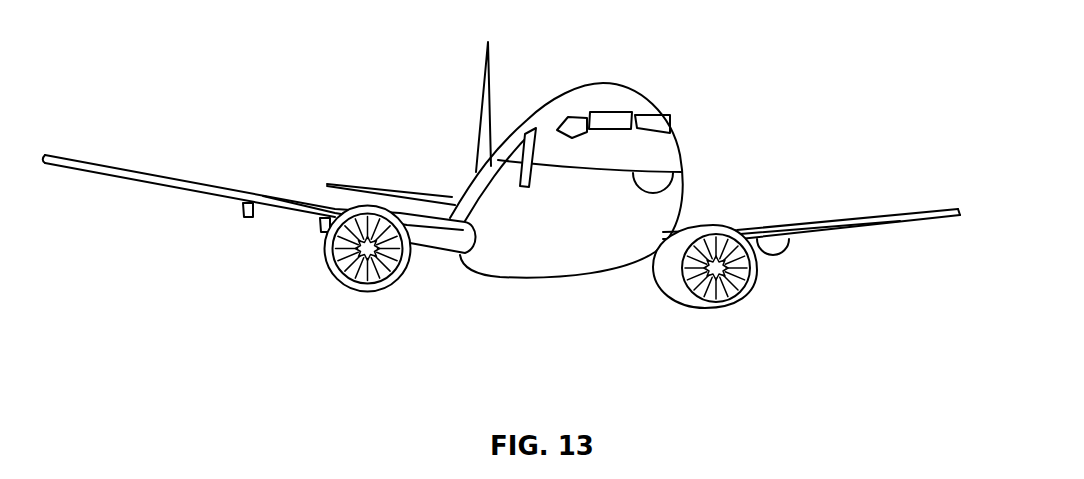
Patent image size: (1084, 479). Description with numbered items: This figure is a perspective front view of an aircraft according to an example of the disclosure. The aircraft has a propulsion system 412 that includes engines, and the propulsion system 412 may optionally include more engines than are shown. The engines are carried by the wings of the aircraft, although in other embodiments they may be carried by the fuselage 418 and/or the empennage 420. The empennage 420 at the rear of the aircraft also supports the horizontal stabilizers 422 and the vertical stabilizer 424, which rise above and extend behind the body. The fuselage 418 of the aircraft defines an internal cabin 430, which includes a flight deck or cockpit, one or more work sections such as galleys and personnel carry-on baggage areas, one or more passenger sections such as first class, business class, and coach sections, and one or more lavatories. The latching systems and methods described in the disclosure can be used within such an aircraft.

The propulsion system 412 is at (501, 203).
The fuselage 418 is at (683, 141).
The empennage 420 is at (473, 172).
The horizontal stabilizers 422 is at (355, 186).
The vertical stabilizer 424 is at (484, 74).
The internal cabin 430 is at (612, 118).